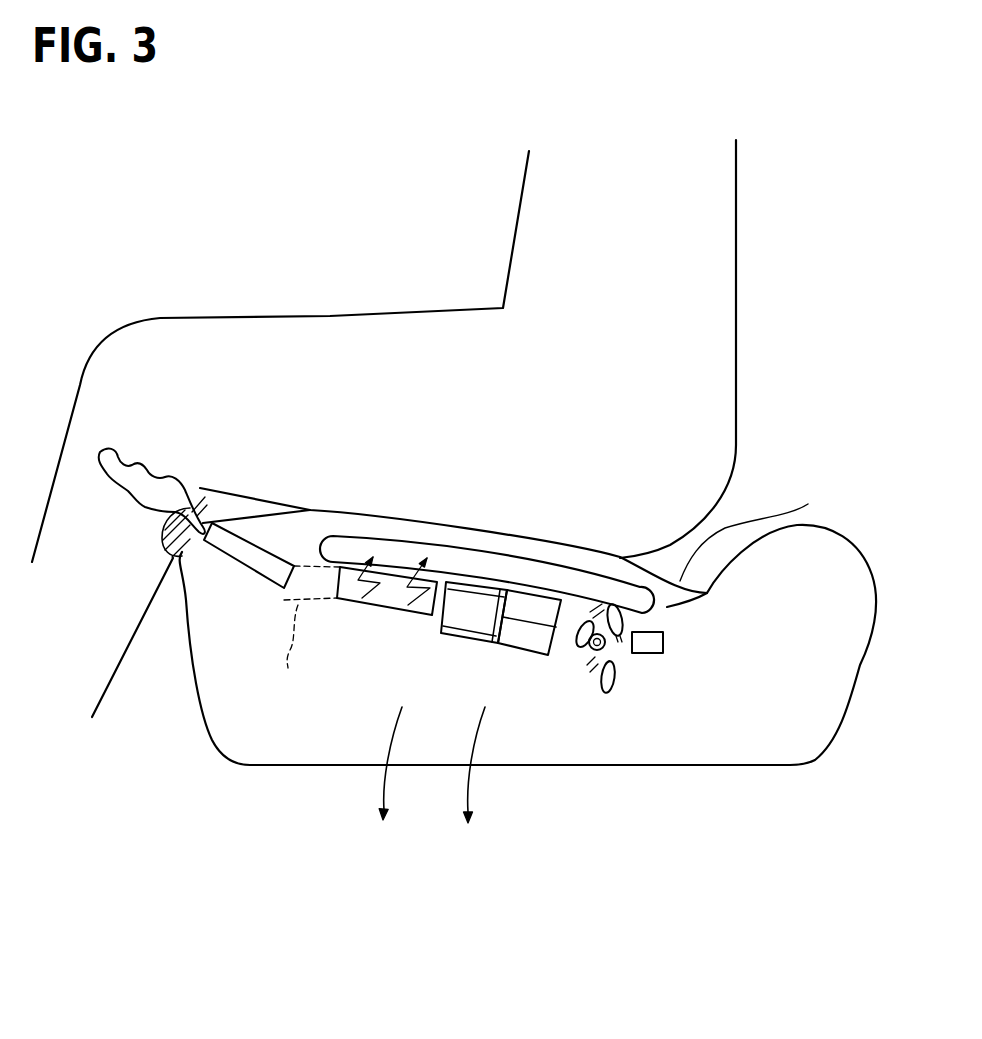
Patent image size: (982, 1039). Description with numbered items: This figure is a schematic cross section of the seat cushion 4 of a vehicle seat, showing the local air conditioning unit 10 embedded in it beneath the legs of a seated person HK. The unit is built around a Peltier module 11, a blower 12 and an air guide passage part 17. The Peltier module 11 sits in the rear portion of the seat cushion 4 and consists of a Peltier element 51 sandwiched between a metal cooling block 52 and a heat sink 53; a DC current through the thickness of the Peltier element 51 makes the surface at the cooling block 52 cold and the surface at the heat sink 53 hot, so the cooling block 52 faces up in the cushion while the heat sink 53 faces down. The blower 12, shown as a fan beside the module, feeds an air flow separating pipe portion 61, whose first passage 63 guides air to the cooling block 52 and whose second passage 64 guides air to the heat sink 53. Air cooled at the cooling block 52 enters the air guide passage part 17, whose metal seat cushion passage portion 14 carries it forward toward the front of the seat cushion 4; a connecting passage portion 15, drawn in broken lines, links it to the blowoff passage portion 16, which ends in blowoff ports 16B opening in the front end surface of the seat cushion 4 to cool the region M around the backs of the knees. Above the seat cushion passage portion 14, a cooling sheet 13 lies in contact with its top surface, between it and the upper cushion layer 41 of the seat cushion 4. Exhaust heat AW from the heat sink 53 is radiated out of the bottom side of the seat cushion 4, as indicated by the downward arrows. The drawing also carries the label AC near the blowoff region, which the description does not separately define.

The seat cushion 4 is at (808, 504).
The local air conditioning unit 10 is at (453, 643).
The Peltier module 11 is at (435, 620).
The blower 12 is at (615, 678).
The cooling sheet 13 is at (527, 558).
The seat cushion passage portion 14 is at (393, 600).
The connecting passage portion 15 is at (305, 633).
The blowoff passage portions 16 is at (250, 560).
The blowoff ports 16B is at (207, 523).
The air guide passage part 17 is at (358, 617).
The upper cushion layer 41 is at (362, 528).
The Peltier element 51 is at (478, 613).
The cooling block 52 is at (475, 589).
The heat sink 53 is at (468, 637).
The air flow separating pipe portion 61 is at (518, 653).
The first passage 63 is at (533, 602).
The second passage 64 is at (532, 637).
The person HK is at (677, 307).
The air conditioner AC is at (143, 474).
The region around the backs of the knees M is at (180, 553).
The exhaust heat AW is at (432, 776).